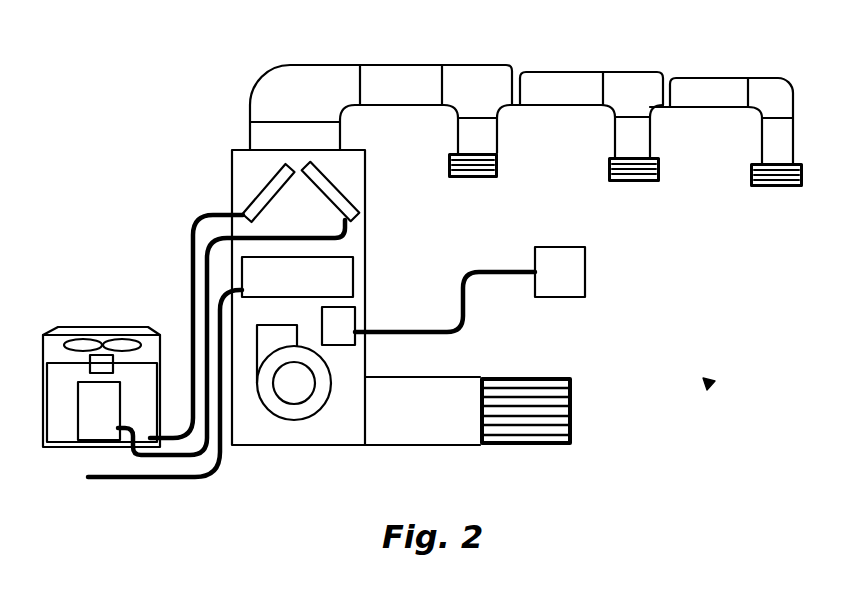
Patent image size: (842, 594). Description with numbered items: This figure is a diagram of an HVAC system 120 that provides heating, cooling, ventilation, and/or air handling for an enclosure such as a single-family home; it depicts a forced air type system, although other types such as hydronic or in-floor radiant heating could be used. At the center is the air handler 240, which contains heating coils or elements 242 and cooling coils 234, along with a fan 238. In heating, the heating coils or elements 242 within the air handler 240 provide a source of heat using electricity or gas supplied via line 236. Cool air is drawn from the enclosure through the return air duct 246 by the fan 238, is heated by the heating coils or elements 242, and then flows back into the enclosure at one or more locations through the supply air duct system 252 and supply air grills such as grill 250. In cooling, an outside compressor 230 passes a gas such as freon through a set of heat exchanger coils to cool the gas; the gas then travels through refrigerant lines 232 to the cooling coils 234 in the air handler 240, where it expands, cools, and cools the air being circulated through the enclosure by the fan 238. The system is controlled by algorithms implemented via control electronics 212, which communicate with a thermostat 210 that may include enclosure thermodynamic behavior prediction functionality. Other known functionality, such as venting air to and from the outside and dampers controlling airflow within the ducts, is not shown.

The HVAC system 120 is at (710, 384).
The thermostat 210 is at (560, 272).
The control electronics 212 is at (355, 315).
The outside compressor 230 is at (105, 327).
The refrigerant lines 232 is at (193, 245).
The cooling coils 234 is at (253, 190).
The line 236 is at (193, 478).
The fan 238 is at (314, 420).
The air handler 240 is at (232, 150).
The heating coils or elements 242 is at (297, 277).
The return air duct 246 is at (572, 415).
The supply air grill 250 is at (498, 165).
The supply air duct system 252 is at (553, 65).